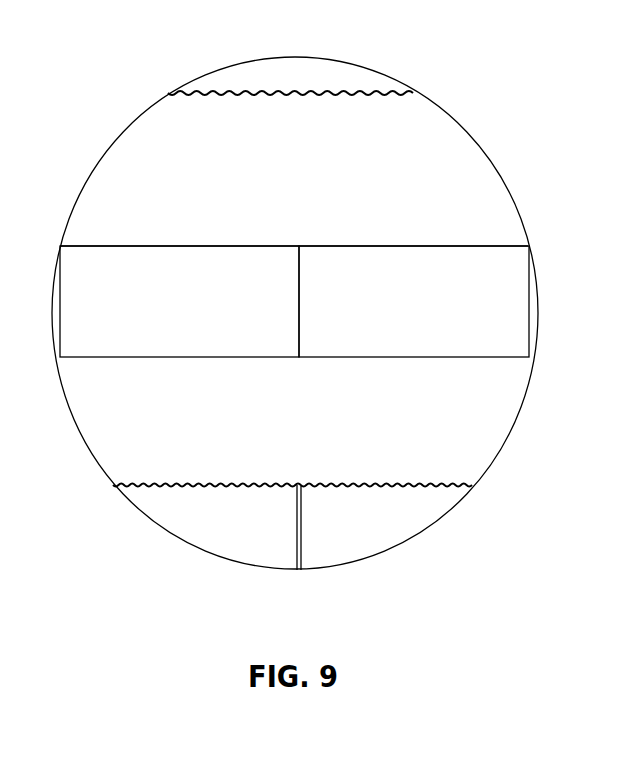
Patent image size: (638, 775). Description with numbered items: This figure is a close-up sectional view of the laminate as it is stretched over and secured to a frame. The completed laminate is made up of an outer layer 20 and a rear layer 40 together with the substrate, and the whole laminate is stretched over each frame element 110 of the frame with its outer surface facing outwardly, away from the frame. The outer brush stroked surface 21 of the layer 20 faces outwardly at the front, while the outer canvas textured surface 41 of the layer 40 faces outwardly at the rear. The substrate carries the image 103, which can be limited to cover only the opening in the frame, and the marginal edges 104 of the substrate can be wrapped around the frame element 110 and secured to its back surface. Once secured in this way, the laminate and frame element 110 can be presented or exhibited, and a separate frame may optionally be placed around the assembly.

The laminate layer 20 is at (294, 204).
The outer brush stroked surface 21 is at (348, 93).
The laminate layer 40 is at (172, 458).
The outer canvas textured surface 41 is at (365, 491).
The image 103 is at (414, 301).
The marginal edges 104 is at (179, 301).
The frame element 110 is at (208, 538).